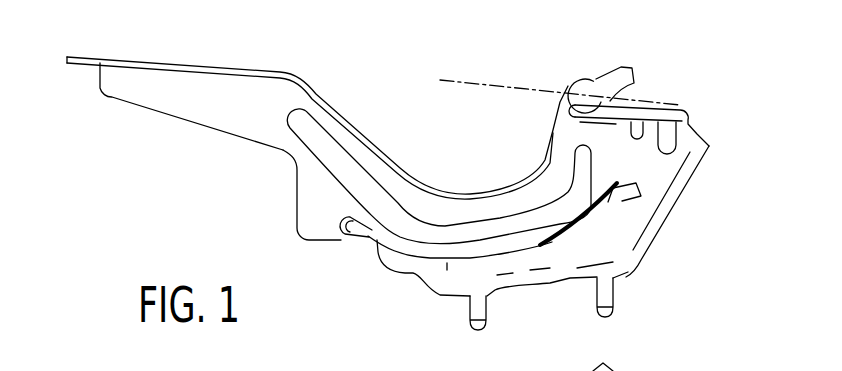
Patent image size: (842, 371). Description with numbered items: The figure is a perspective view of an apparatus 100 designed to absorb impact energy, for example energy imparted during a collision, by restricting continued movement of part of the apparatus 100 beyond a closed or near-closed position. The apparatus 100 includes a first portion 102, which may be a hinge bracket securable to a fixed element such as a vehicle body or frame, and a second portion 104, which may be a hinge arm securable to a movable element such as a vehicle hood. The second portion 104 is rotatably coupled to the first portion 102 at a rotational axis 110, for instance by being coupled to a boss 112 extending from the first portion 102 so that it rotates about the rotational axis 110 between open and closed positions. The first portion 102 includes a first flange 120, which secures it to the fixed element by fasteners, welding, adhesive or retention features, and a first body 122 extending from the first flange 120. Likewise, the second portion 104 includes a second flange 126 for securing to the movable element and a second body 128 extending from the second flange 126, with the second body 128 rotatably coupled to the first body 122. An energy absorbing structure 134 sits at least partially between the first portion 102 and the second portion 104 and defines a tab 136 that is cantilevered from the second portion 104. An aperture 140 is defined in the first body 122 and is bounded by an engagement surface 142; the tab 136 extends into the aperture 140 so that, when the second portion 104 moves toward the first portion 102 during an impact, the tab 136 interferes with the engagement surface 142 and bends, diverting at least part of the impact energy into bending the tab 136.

The apparatus 100 is at (332, 43).
The first portion 102 is at (620, 261).
The second portion 104 is at (133, 83).
The rotational axis 110 is at (477, 80).
The boss 112 is at (580, 93).
The first flange 120 is at (503, 285).
The first body 122 is at (670, 138).
The second flange 126 is at (112, 62).
The second body 128 is at (200, 103).
The energy absorbing structure 134 is at (641, 190).
The tab 136 is at (605, 220).
The aperture 140 is at (615, 218).
The engagement surface 142 is at (592, 236).